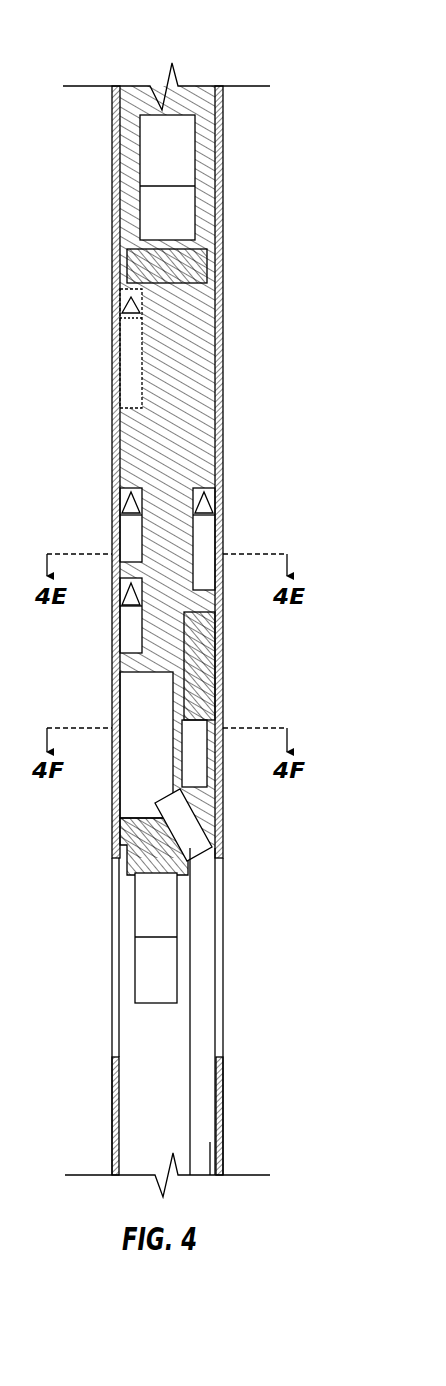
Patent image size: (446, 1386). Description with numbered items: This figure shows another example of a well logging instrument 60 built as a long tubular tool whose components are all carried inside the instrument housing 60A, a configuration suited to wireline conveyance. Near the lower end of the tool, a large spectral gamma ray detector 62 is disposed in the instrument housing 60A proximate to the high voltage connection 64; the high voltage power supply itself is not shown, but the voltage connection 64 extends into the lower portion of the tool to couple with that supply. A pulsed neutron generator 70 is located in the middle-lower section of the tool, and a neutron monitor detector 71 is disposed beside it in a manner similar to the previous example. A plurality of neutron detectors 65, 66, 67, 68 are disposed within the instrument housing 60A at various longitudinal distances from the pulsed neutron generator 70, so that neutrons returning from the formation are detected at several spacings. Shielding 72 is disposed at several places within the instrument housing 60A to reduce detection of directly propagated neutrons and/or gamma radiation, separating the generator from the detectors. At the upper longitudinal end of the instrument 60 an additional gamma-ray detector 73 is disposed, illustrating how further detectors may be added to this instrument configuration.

The instrument 60 is at (262, 118).
The instrument housing 60A is at (225, 402).
The spectral gamma ray detector 62 is at (143, 967).
The high voltage connection 64 is at (208, 1012).
The neutron detector 65 is at (128, 362).
The neutron detector 66 is at (125, 520).
The neutron detector 67 is at (208, 525).
The neutron detector 68 is at (123, 620).
The pulsed neutron generator 70 is at (128, 790).
The neutron monitor detector 71 is at (200, 777).
The shielding 72 is at (200, 267).
The gamma-ray detector 73 is at (190, 155).